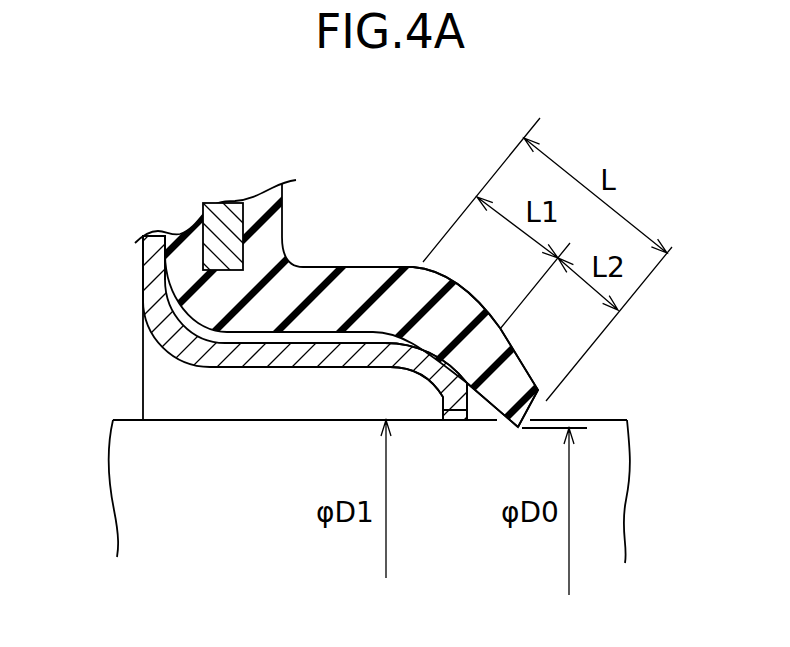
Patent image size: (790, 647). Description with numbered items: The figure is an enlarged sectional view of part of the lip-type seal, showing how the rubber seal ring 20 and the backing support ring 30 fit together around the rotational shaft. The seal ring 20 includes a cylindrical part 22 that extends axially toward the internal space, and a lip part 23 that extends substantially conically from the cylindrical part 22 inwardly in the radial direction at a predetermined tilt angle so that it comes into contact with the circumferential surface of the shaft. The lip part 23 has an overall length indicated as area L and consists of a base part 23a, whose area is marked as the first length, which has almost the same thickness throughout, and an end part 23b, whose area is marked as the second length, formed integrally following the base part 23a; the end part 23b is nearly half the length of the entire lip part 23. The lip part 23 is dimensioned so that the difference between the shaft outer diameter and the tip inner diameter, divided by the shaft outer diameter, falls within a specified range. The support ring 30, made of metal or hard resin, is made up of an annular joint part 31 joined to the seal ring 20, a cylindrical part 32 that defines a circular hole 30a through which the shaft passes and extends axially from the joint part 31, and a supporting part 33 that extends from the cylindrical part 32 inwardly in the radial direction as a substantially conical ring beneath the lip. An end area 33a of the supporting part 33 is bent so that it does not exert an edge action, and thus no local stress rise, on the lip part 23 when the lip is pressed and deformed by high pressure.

The seal ring 20 is at (301, 218).
The cylindrical part 22 is at (337, 297).
The lip part 23 is at (504, 279).
The base part 23a is at (457, 308).
The end part 23b is at (518, 372).
The support ring 30 is at (235, 368).
The circular hole 30a is at (460, 411).
The annular joint part 31 is at (152, 263).
The cylindrical part 32 is at (273, 357).
The supporting part 33 is at (413, 383).
The end area 33a is at (465, 392).